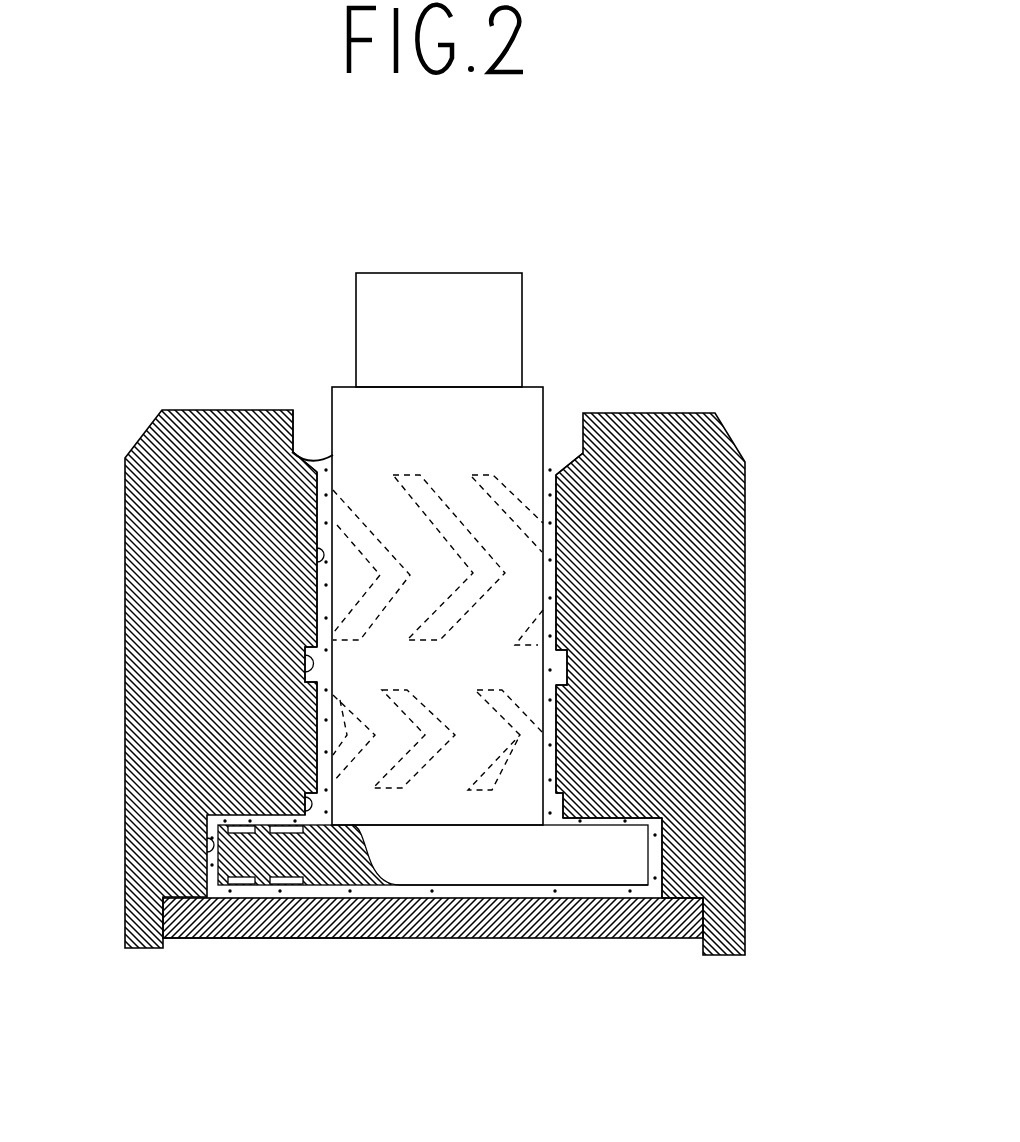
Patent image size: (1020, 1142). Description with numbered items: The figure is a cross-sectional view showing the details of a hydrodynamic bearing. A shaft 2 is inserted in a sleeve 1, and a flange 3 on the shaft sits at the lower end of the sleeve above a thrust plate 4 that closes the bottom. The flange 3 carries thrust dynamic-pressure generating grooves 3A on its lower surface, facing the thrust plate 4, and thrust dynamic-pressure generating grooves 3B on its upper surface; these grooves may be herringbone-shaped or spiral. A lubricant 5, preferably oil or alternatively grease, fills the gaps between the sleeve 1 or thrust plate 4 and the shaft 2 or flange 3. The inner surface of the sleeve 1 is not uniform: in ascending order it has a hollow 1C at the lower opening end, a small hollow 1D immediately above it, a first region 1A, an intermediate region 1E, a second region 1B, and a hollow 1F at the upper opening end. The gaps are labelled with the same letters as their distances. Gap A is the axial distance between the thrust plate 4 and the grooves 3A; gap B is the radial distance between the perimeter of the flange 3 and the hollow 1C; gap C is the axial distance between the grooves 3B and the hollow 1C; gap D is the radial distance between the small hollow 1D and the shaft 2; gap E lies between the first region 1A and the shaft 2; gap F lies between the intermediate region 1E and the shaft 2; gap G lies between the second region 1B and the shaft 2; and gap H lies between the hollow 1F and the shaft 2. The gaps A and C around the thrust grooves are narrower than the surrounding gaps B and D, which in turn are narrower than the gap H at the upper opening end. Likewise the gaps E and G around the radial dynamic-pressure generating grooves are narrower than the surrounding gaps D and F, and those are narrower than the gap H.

The sleeve 1 is at (150, 417).
The first region 1A is at (317, 732).
The second region 1B is at (317, 535).
The hollow at the lower opening end 1C is at (200, 818).
The small hollow 1D is at (317, 793).
The intermediate region 1E is at (317, 647).
The hollow at the upper opening end 1F is at (292, 427).
The shaft 2 is at (428, 322).
The flange 3 is at (435, 858).
The thrust dynamic-pressure generating grooves on the lower surface of the flange 3A is at (217, 935).
The thrust dynamic-pressure generating grooves on the upper surface of the flange 3B is at (245, 880).
The thrust plate 4 is at (453, 922).
The lubricant 5 is at (319, 468).
The gap A is at (640, 903).
The gap B is at (655, 855).
The gap C is at (620, 815).
The gap D is at (560, 795).
The gap E is at (557, 720).
The gap F is at (553, 667).
The gap G is at (553, 557).
The gap H is at (562, 430).